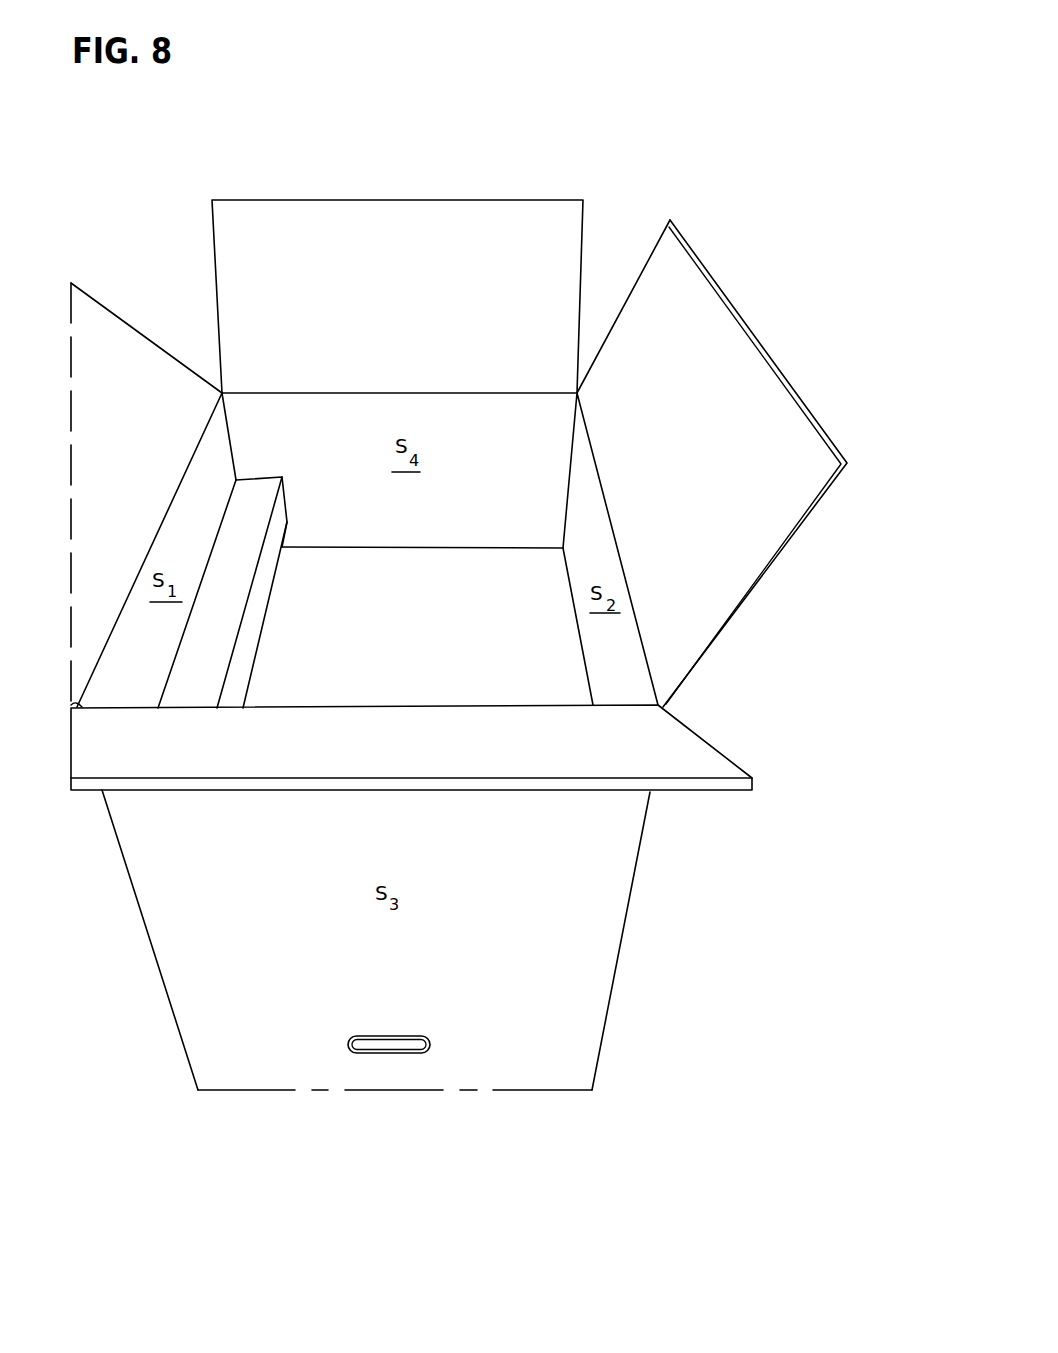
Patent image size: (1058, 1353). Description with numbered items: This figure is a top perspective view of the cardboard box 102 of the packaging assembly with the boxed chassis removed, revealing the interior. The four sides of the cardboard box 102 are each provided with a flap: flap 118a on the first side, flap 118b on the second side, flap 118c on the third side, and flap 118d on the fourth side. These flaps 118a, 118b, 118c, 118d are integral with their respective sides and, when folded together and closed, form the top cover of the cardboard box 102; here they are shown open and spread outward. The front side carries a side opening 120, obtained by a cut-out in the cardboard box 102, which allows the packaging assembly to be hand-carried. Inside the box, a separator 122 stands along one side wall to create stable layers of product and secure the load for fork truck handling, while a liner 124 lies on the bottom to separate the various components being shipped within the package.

The cardboard box 102 is at (673, 142).
The flap 118a is at (115, 335).
The flap 118b is at (743, 573).
The flap 118c is at (702, 783).
The flap 118d is at (408, 230).
The side opening 120 is at (405, 1047).
The separator 122 is at (258, 490).
The liner 124 is at (443, 646).